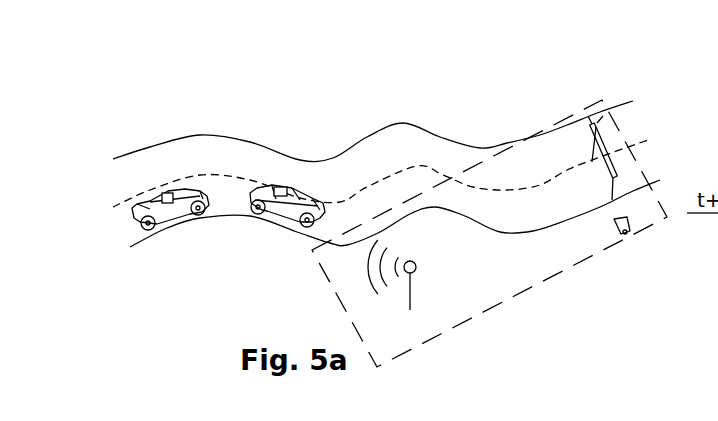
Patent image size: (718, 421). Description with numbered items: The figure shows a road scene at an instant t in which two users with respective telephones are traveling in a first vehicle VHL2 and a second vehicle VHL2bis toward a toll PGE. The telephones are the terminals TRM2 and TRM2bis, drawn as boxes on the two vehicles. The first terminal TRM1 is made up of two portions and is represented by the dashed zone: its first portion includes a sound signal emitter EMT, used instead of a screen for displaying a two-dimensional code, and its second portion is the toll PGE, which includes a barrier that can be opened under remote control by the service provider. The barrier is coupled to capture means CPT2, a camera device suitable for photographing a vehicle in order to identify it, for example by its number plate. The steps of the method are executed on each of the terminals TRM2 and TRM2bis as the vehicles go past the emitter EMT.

The first terminal TRM1 is at (558, 280).
The second terminal TRM2 is at (280, 187).
The second terminal TRM2bis is at (167, 192).
The first vehicle VHL2 is at (293, 213).
The second vehicle VHL2bis is at (178, 213).
The sound signal emitter EMT is at (410, 290).
The toll PGE is at (608, 142).
The capture means CPT2 is at (623, 243).